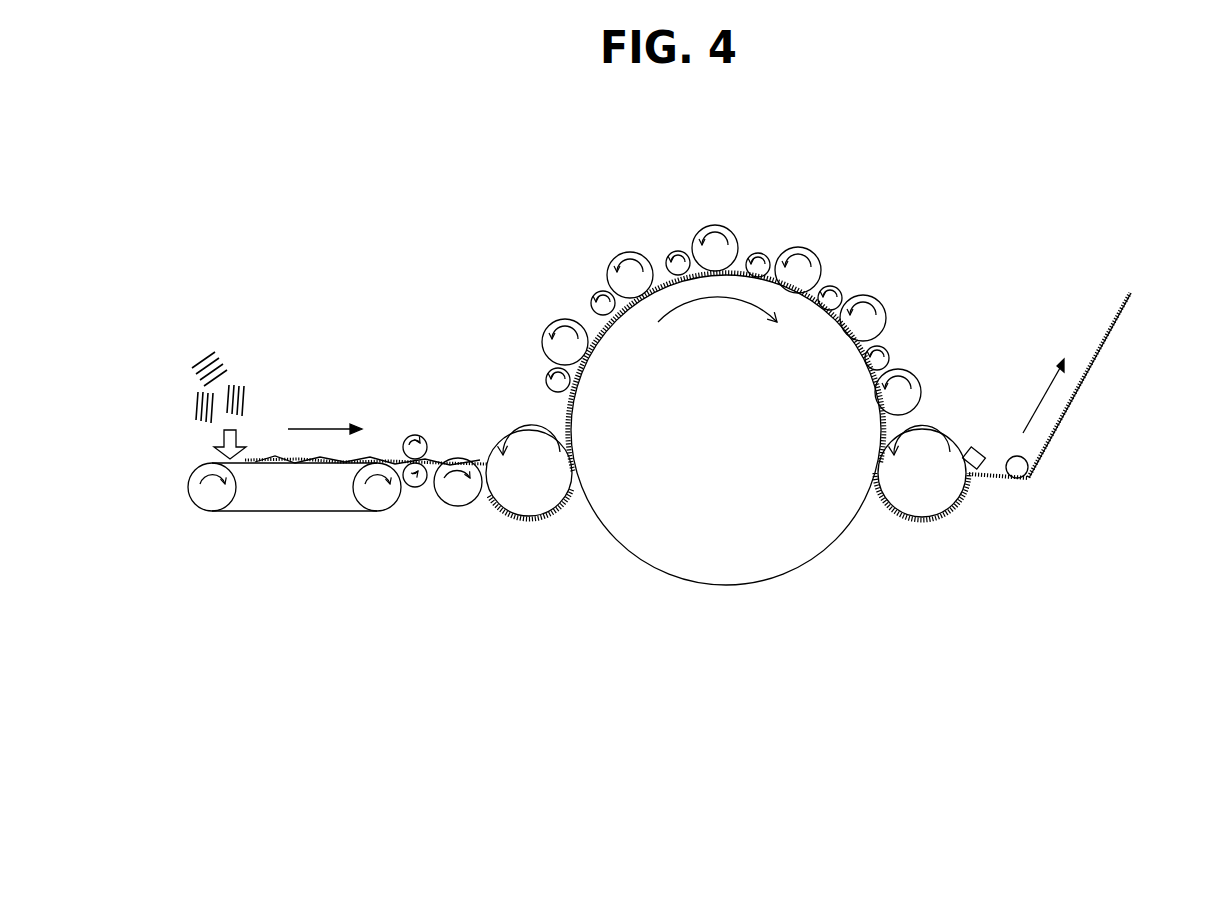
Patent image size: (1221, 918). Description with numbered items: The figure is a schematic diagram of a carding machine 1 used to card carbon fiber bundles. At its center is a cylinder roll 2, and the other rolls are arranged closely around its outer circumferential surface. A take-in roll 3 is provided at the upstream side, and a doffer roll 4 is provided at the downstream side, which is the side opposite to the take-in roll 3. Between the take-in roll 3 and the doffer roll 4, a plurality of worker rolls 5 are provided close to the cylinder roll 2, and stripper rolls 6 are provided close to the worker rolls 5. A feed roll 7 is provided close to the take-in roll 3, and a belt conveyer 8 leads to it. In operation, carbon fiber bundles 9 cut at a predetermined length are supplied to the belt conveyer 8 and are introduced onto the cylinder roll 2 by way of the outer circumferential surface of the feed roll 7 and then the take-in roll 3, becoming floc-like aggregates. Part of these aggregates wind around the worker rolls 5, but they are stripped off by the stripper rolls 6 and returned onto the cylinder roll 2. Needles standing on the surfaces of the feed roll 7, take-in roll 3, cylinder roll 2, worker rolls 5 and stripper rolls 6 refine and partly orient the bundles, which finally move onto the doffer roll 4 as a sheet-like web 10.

The carding machine 1 is at (600, 720).
The cylinder roll 2 is at (653, 570).
The take-in roll 3 is at (497, 508).
The doffer roll 4 is at (943, 523).
The worker rolls 5 is at (606, 263).
The stripper rolls 6 is at (590, 301).
The feed roll 7 is at (440, 504).
The belt conveyer 8 is at (296, 516).
The carbon fiber bundles 9 is at (232, 357).
The sheet-like web 10 is at (1077, 402).